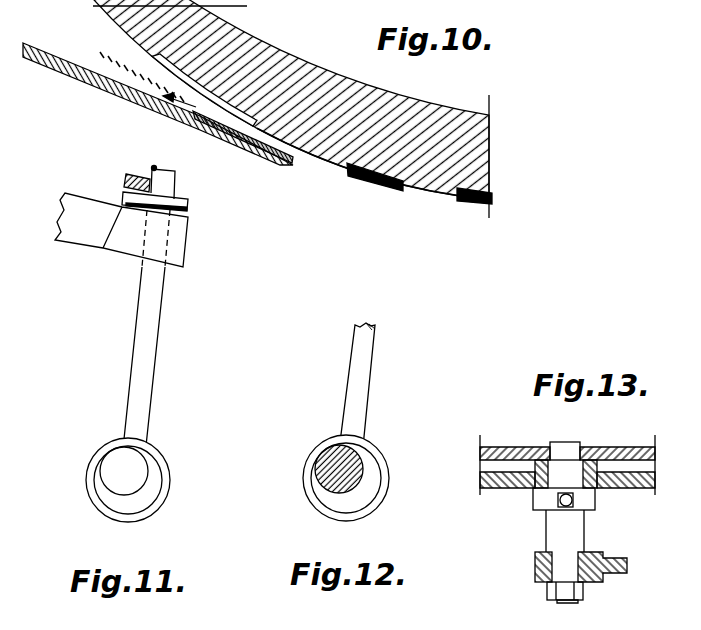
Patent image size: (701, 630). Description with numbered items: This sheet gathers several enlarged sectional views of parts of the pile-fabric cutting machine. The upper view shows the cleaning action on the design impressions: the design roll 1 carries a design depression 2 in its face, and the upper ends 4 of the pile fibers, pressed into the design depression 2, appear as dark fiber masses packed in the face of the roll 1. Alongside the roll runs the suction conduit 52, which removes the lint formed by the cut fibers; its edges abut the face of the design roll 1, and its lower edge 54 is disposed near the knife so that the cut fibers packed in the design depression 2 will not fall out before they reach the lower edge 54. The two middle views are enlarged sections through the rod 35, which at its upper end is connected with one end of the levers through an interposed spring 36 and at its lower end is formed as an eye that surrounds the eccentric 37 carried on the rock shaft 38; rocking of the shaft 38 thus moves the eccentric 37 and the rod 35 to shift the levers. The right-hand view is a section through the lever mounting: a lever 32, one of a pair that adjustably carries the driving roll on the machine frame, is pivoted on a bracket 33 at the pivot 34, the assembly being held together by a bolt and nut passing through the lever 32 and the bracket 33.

In FIG. 10, the roll 1 is at (410, 108).
In FIG. 10, the design depression 2 is at (347, 168).
In FIG. 10, the upper ends of the pile fibers 4 is at (378, 188).
In FIG. 10, the suction conduit 52 is at (69, 76).
In FIG. 10, the lower edge 54 is at (290, 159).
In FIG. 11, the rod 35 is at (153, 364).
In FIG. 12, the rod 35 is at (366, 385).
In FIG. 11, the spring 36 is at (189, 210).
In FIG. 11, the eccentric 37 is at (157, 485).
In FIG. 12, the eccentric 37 is at (372, 483).
In FIG. 11, the rock shaft 38 is at (124, 471).
In FIG. 12, the rock shaft 38 is at (315, 462).
In FIG. 13, the pivot 34 is at (580, 448).
In FIG. 13, the lever 32 is at (633, 489).
In FIG. 13, the bracket 33 is at (613, 574).